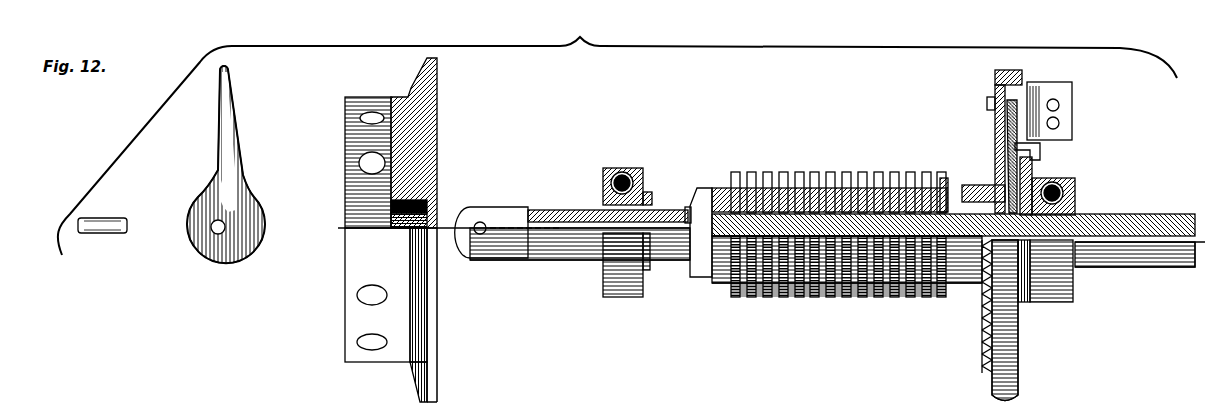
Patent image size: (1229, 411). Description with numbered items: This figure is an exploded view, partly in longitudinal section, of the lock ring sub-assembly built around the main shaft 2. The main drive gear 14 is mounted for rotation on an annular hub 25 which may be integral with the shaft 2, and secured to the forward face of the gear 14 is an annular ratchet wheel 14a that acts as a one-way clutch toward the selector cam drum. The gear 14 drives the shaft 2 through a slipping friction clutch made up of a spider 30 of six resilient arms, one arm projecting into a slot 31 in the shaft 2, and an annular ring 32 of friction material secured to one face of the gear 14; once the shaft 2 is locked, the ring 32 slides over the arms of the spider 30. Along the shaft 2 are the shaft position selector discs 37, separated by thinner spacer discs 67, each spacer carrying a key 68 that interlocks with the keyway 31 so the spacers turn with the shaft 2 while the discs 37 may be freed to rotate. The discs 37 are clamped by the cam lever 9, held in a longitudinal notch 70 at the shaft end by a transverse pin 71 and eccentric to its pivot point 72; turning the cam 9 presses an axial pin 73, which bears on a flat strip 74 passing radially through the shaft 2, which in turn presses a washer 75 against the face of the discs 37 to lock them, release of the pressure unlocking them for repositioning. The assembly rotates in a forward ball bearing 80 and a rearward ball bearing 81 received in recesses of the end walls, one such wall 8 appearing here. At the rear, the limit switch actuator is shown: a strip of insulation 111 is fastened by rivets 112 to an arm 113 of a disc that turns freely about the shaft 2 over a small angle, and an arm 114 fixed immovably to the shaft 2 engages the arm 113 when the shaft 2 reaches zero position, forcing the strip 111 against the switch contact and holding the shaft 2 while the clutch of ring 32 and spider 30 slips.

The main shaft 2 is at (565, 262).
The bracket 8 is at (395, 298).
The cam lever 9 is at (233, 170).
The main drive gear 14 is at (1018, 393).
The annular ratchet wheel 14a is at (984, 342).
The hub 25 is at (950, 192).
The spider 30 is at (1014, 108).
The slot 31 is at (1140, 215).
The annular ring 32 is at (993, 108).
The shaft position selector discs 37 is at (882, 310).
The spacer discs 67 is at (771, 298).
The key 68 is at (786, 180).
The longitudinal notch 70 is at (500, 262).
The pin 71 is at (108, 234).
The pivot point 72 is at (216, 232).
The pin 73 is at (545, 212).
The flat strip 74 is at (692, 272).
The washer 75 is at (712, 292).
The forward ball bearing 80 is at (617, 298).
The rearward ball bearing 81 is at (1062, 302).
The strip of insulation 111 is at (1068, 96).
The rivets 112 is at (1058, 126).
The arm 113 is at (1034, 166).
The arm 114 is at (1040, 151).